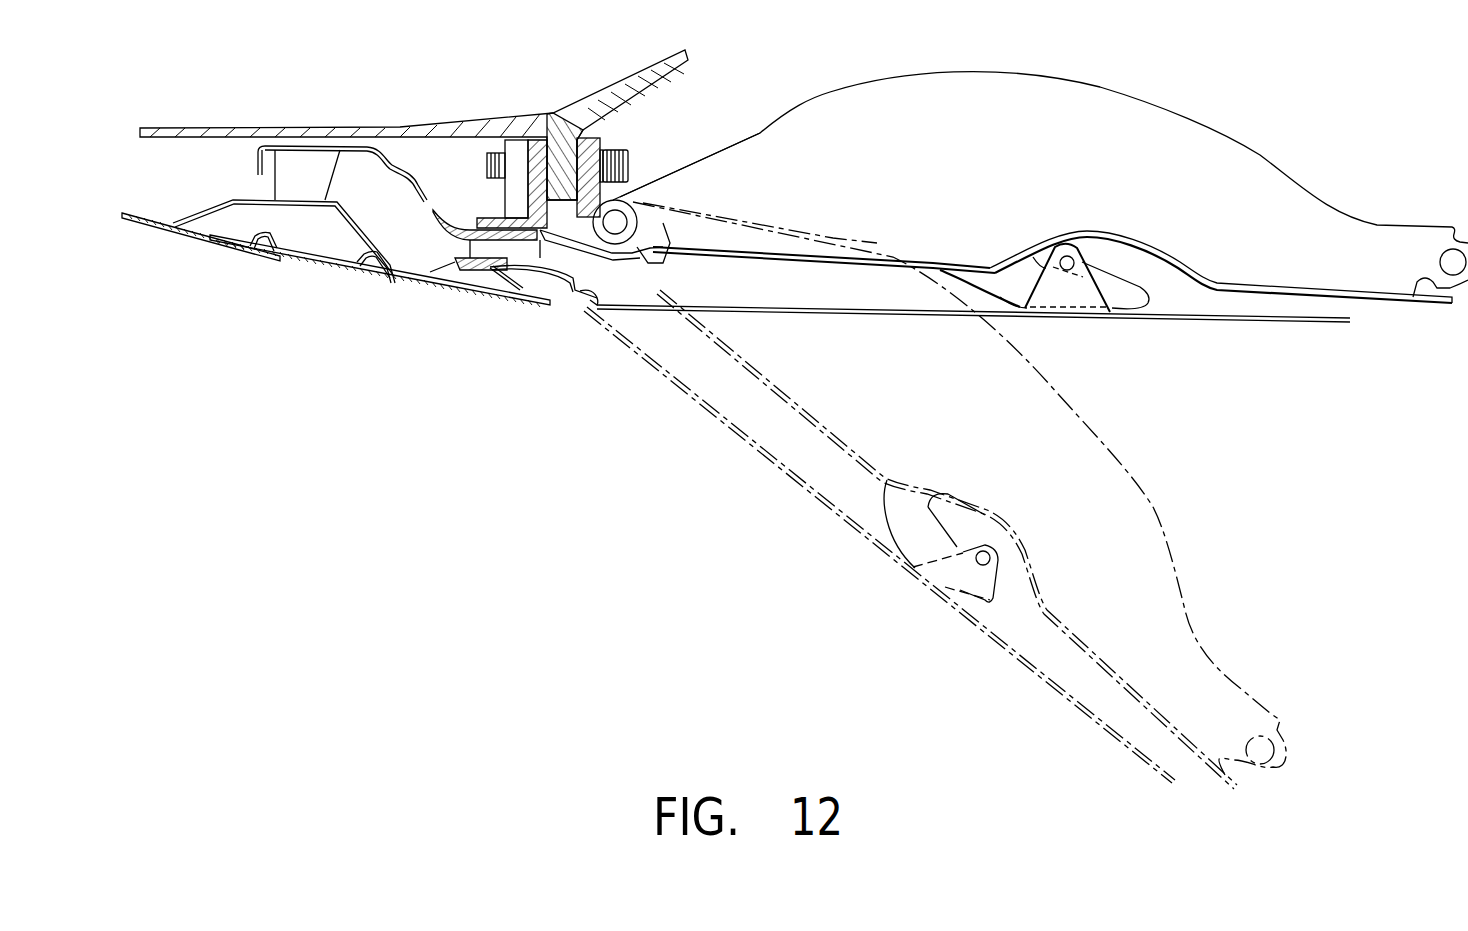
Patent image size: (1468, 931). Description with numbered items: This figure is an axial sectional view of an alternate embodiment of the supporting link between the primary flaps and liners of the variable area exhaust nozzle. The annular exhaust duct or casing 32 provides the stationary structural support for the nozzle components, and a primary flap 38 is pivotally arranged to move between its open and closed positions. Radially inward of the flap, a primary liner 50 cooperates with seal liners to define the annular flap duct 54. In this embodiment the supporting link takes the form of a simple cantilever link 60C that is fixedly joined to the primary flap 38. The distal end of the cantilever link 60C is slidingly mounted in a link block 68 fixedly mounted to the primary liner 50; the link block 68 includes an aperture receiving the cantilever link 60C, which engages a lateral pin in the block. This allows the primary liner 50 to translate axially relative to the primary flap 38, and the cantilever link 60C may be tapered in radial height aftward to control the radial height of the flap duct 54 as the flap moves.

The exhaust duct or casing 32 is at (620, 81).
The primary flap 38 is at (1138, 97).
The primary liner 50 is at (803, 313).
The flap duct 54 is at (758, 296).
The cantilever link 60C is at (1125, 283).
The link block 68 is at (1058, 295).